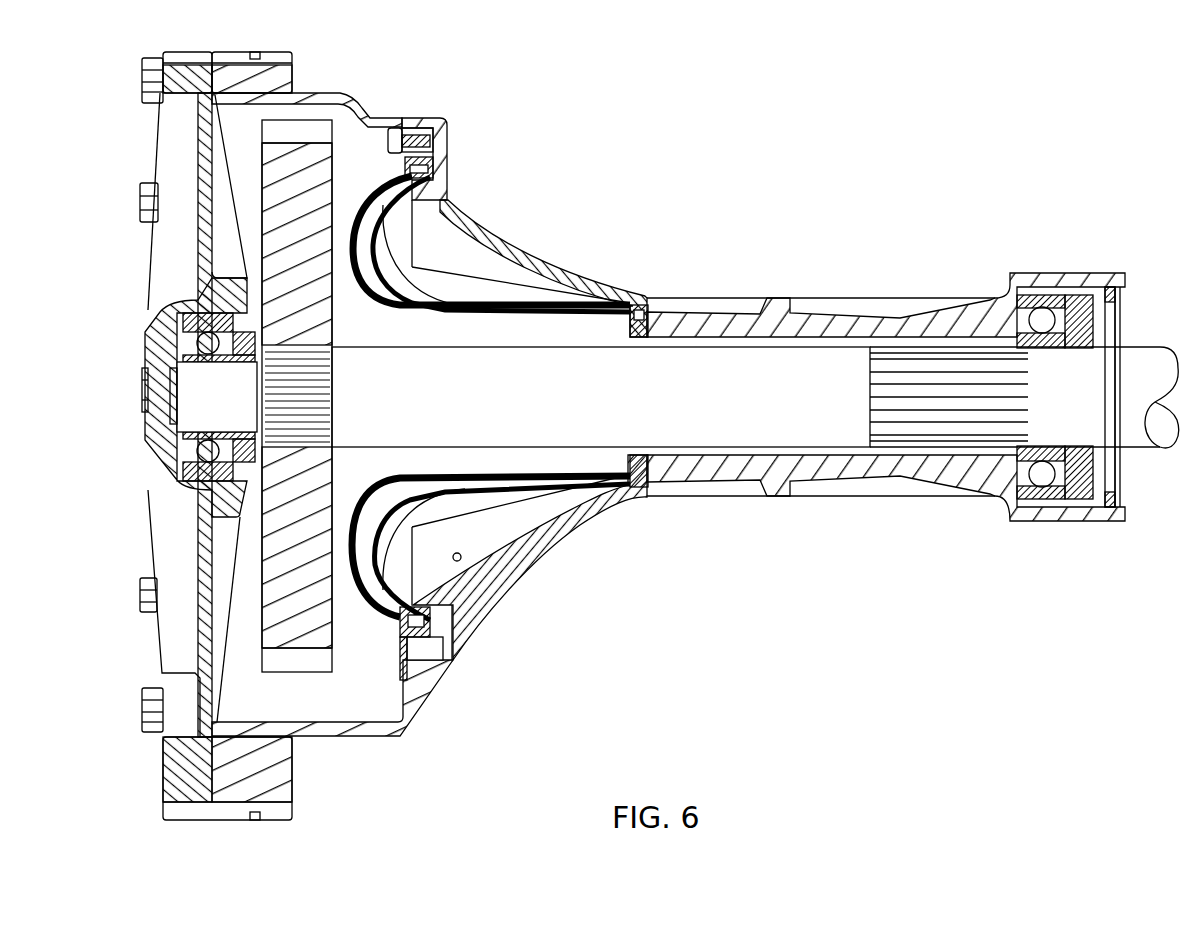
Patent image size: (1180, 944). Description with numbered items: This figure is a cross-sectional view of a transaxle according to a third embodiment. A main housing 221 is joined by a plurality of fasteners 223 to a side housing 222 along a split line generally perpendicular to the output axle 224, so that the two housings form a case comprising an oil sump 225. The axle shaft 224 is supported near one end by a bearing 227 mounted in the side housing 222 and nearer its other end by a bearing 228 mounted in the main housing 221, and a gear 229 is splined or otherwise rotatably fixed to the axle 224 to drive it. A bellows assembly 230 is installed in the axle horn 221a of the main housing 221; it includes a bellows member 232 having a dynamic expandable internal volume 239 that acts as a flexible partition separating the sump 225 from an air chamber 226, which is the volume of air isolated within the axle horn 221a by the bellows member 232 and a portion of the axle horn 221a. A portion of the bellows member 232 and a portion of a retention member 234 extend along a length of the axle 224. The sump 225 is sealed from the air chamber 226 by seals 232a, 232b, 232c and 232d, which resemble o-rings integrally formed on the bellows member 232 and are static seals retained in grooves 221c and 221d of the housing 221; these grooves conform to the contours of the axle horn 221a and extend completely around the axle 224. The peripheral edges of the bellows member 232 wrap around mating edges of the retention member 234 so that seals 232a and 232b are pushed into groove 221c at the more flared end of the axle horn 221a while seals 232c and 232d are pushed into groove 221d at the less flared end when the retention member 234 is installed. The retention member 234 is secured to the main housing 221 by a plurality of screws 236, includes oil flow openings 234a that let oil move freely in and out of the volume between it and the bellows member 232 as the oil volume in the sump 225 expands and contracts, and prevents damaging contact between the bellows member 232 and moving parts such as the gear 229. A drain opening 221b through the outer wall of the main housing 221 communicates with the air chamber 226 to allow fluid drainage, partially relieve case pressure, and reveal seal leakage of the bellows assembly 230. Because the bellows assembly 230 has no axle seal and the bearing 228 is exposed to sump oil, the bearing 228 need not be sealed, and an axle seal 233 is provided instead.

The main housing 221 is at (233, 100).
The axle horn 221a is at (540, 262).
The drain opening 221b is at (468, 557).
The groove 221c is at (452, 146).
The groove 221d is at (652, 285).
The side housing 222 is at (180, 95).
The fasteners 223 is at (142, 72).
The output axle 224 is at (620, 407).
The oil sump 225 is at (386, 701).
The air chamber 226 is at (478, 547).
The bearing 227 is at (185, 318).
The bearing 228 is at (1040, 318).
The gear 229 is at (298, 640).
The bellows assembly 230 is at (576, 167).
The bellows member 232 is at (413, 297).
The seal 232a is at (430, 163).
The seal 232b is at (440, 186).
The seal 232c is at (655, 328).
The seal 232d is at (655, 300).
The axle seal 233 is at (1078, 300).
The retention member 234 is at (385, 618).
The oil flow opening 234a is at (352, 255).
The screws 236 is at (388, 143).
The dynamic expandable internal volume 239 is at (395, 500).